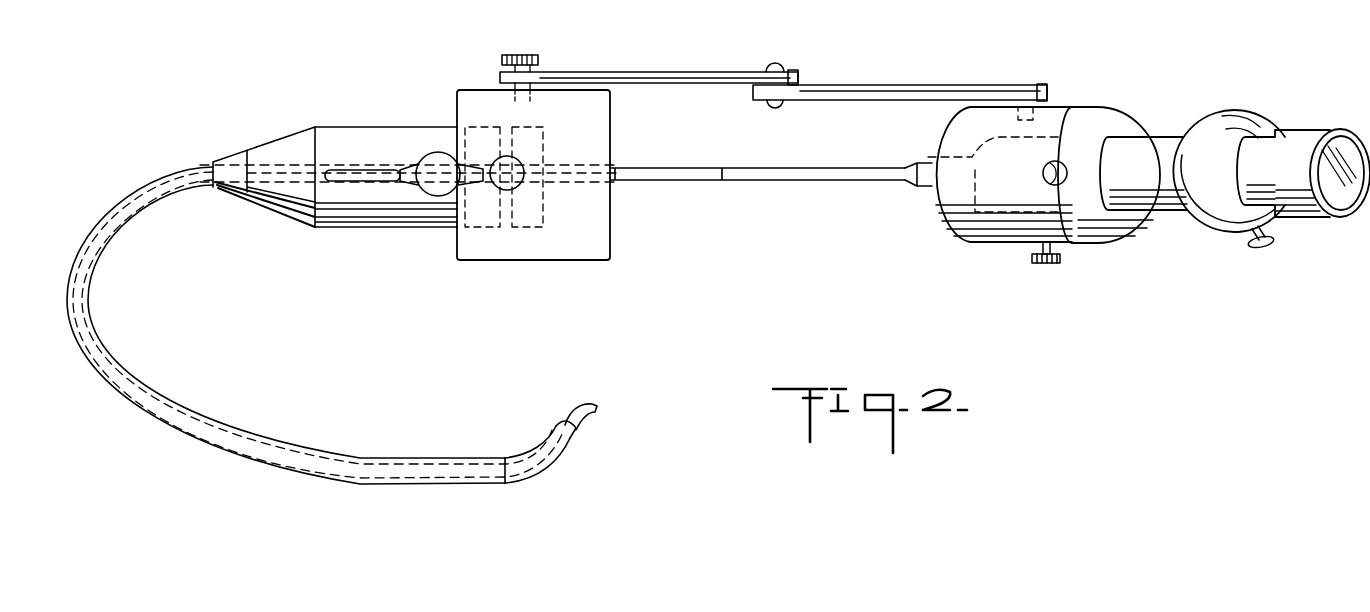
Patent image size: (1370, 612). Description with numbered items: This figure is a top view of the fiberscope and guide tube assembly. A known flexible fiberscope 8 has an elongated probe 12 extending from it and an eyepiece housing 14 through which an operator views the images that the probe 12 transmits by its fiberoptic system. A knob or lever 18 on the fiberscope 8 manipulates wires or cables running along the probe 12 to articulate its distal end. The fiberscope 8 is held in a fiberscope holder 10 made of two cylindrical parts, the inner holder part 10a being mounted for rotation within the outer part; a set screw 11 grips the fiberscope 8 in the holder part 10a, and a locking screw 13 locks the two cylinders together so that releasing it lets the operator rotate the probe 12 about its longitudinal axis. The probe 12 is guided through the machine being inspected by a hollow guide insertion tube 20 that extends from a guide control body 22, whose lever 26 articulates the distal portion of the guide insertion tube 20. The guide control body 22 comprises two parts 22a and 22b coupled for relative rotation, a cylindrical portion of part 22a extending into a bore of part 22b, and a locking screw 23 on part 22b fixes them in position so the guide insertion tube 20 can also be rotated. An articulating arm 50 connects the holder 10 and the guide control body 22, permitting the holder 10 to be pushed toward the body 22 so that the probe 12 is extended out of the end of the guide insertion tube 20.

The fiberscope 8 is at (1210, 222).
The fiberscope holder 10 is at (982, 243).
The fiberscope holder part 10a is at (1063, 105).
The set screw 11 is at (1044, 174).
The fiberscope probe 12 is at (743, 181).
The locking screw 13 is at (1041, 264).
The eyepiece housing 14 is at (1322, 128).
The knob or lever 18 is at (1270, 244).
The guide insertion tube 20 is at (117, 370).
The guide control body 22 is at (395, 110).
The guide control body part 22a is at (343, 224).
The guide control body part 22b is at (545, 250).
The locking screw 23 is at (472, 97).
The lever 26 is at (438, 197).
The articulating arm 50 is at (852, 80).